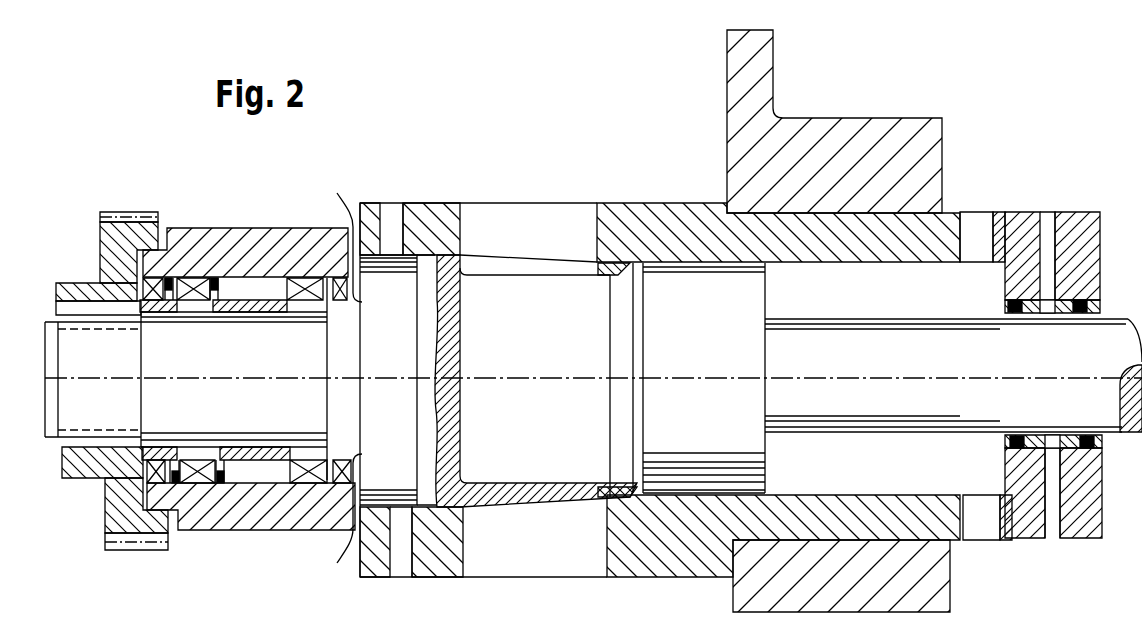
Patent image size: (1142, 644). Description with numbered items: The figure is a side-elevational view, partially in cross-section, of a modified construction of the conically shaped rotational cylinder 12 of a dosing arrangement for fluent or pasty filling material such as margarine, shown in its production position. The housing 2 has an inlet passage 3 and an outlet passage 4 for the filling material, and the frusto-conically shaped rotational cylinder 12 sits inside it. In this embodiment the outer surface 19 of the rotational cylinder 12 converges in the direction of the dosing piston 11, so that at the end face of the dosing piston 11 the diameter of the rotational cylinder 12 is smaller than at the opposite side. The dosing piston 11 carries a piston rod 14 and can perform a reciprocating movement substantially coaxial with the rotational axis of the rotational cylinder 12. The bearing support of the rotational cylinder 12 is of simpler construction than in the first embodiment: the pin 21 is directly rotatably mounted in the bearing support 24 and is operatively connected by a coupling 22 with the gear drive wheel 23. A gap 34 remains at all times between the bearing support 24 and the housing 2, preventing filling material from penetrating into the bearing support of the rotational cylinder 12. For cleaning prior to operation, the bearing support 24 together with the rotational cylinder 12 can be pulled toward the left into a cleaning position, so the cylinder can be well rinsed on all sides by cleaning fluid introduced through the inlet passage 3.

The housing 2 is at (629, 210).
The inlet passage 3 is at (484, 216).
The outlet passage 4 is at (496, 553).
The dosing piston 11 is at (725, 472).
The rotational cylinder 12 is at (562, 500).
The piston rod 14 is at (895, 418).
The outer surface 19 is at (586, 500).
The pin 21 is at (147, 420).
The coupling 22 is at (82, 285).
The gear drive wheel 23 is at (147, 533).
The bearing support 24 is at (237, 238).
The gap 34 is at (338, 195).